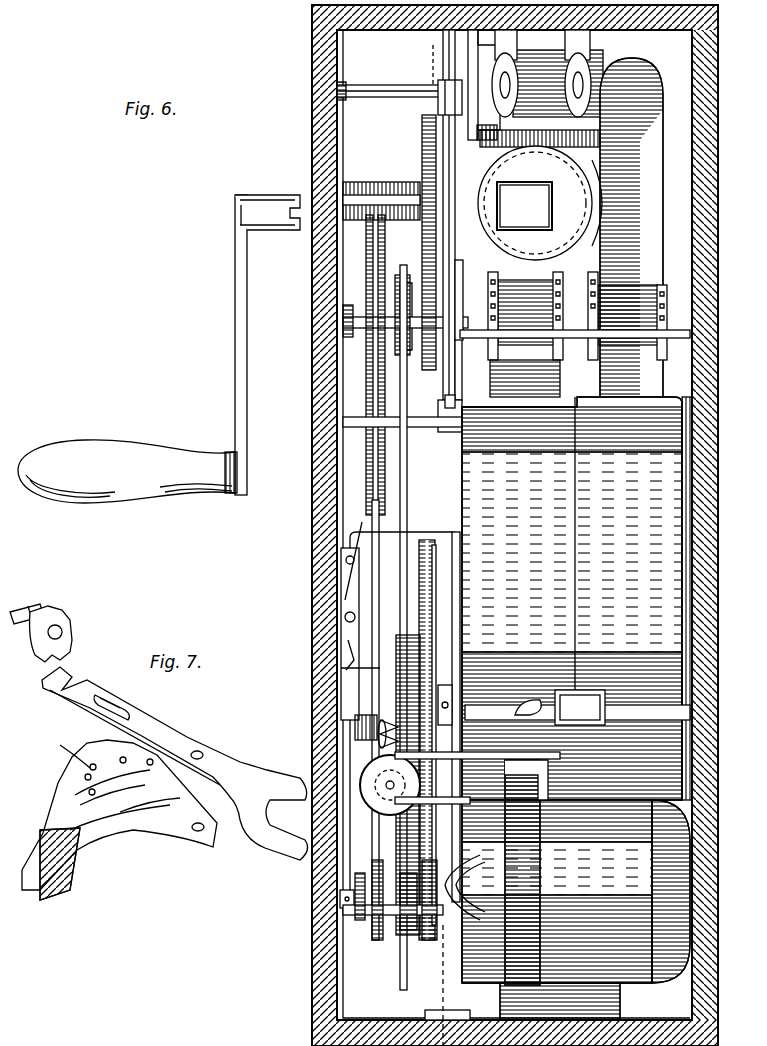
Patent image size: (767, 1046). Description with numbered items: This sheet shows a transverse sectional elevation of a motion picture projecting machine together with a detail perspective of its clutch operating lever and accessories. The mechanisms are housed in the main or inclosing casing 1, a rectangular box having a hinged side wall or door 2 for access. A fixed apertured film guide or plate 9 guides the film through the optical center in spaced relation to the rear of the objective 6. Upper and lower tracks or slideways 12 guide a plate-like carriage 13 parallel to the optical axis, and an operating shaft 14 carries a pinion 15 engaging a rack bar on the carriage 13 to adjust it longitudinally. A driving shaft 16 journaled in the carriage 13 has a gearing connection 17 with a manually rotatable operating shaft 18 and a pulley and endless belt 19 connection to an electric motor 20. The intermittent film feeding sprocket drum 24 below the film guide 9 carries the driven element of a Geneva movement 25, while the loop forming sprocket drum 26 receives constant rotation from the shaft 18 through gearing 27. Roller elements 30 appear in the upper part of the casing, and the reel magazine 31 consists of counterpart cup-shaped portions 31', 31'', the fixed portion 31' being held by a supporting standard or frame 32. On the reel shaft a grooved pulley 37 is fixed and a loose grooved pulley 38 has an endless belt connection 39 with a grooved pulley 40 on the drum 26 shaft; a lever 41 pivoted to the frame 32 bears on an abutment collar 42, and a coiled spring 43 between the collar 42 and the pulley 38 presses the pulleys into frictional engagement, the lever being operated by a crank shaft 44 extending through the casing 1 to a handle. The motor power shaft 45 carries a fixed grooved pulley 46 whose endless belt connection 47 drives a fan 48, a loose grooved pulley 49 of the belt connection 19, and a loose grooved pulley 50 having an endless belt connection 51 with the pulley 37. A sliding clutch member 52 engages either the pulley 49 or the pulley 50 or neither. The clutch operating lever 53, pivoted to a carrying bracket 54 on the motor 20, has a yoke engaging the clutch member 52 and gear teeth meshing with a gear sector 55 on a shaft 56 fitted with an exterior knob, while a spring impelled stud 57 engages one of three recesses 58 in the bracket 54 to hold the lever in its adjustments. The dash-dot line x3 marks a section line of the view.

In FIG. 6, the main or inclosing casing 1 is at (312, 47).
In FIG. 6, the hinged side wall or door 2 is at (708, 458).
In FIG. 6, the objective 6 is at (585, 202).
In FIG. 6, the film guide or plate 9 is at (539, 195).
In FIG. 6, the tracks or slideways 12 is at (440, 88).
In FIG. 6, the carriage 13 is at (447, 378).
In FIG. 6, the operating shaft 14 is at (475, 78).
In FIG. 6, the pinion 15 is at (475, 130).
In FIG. 6, the driving shaft 16 is at (345, 318).
In FIG. 6, the gearing connection 17 is at (422, 145).
In FIG. 6, the operating shaft 18 is at (396, 208).
In FIG. 6, the pulley and endless belt 19 is at (377, 512).
In FIG. 6, the electric motor 20 is at (576, 910).
In FIG. 6, the intermittent film feeding sprocket drum 24 is at (562, 292).
In FIG. 6, the Geneva movement 25 is at (414, 278).
In FIG. 6, the sprocket drum 26 is at (667, 305).
In FIG. 6, the gearing 27 is at (447, 372).
In FIG. 6, the roller 30 is at (668, 68).
In FIG. 6, the cylinder 31 is at (577, 598).
In FIG. 6, the fixed magazine portion 31' is at (525, 520).
In FIG. 6, the swinging magazine portion 31'' is at (640, 609).
In FIG. 6, the supporting standard or frame 32 is at (460, 592).
In FIG. 6, the grooved pulley 37 is at (432, 548).
In FIG. 6, the loose grooved pulley 38 is at (420, 655).
In FIG. 6, the endless belt connection 39 is at (405, 460).
In FIG. 6, the grooved pulley 40 is at (398, 295).
In FIG. 6, the lever 41 is at (341, 668).
In FIG. 6, the abutment collar 42 is at (355, 730).
In FIG. 6, the coiled spring 43 is at (378, 697).
In FIG. 6, the crank shaft 44 is at (342, 618).
In FIG. 6, the power shaft 45 is at (340, 905).
In FIG. 6, the grooved pulley 46 is at (352, 930).
In FIG. 6, the endless belt connection 47 is at (453, 735).
In FIG. 6, the fan 48 is at (522, 705).
In FIG. 6, the grooved pulley 49 is at (368, 930).
In FIG. 6, the grooved pulley 50 is at (428, 940).
In FIG. 6, the endless belt connection 51 is at (435, 570).
In FIG. 6, the sliding clutch member 52 is at (402, 930).
In FIG. 6, the clutch operating lever 53 is at (412, 950).
In FIG. 7, the clutch operating lever 53 is at (195, 760).
In FIG. 7, the carrying bracket 54 is at (133, 832).
In FIG. 7, the gear sector 55 is at (64, 634).
In FIG. 7, the shaft 56 is at (30, 610).
In FIG. 7, the spring impelled stud 57 is at (108, 708).
In FIG. 7, the recesses 58 is at (82, 748).
In FIG. 6, the axis x3 is at (422, 65).